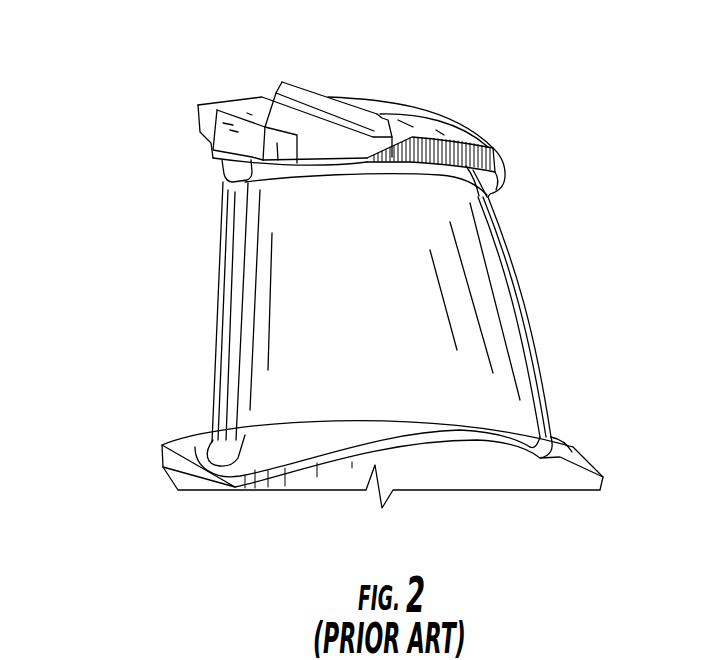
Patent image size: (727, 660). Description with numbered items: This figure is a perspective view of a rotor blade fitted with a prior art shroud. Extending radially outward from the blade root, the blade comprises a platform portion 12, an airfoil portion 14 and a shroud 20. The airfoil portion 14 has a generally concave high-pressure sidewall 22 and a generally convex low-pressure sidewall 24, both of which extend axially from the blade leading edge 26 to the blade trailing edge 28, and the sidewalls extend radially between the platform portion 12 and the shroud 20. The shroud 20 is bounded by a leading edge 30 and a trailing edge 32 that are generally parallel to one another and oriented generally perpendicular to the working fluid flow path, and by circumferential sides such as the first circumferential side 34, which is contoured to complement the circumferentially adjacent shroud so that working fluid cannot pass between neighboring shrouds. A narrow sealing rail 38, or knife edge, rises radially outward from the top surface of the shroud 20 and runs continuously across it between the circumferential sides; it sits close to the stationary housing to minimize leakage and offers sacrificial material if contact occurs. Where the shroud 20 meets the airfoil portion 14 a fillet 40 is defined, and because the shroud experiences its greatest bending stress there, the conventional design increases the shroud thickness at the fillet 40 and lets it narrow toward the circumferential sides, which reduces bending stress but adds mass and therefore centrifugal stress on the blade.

The platform portion 12 is at (606, 459).
The airfoil portion 14 is at (441, 324).
The shroud 20 is at (420, 102).
The high-pressure sidewall 22 is at (300, 376).
The low-pressure sidewall 24 is at (292, 279).
The blade leading edge 26 is at (527, 279).
The blade trailing edge 28 is at (207, 343).
The shroud leading edge 30 is at (206, 163).
The shroud trailing edge 32 is at (496, 148).
The first circumferential side 34 is at (462, 165).
The sealing rail 38 is at (327, 90).
The fillet 40 is at (344, 178).